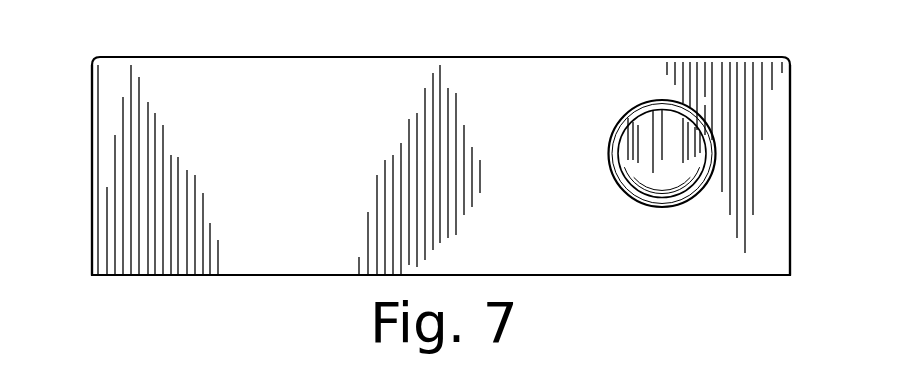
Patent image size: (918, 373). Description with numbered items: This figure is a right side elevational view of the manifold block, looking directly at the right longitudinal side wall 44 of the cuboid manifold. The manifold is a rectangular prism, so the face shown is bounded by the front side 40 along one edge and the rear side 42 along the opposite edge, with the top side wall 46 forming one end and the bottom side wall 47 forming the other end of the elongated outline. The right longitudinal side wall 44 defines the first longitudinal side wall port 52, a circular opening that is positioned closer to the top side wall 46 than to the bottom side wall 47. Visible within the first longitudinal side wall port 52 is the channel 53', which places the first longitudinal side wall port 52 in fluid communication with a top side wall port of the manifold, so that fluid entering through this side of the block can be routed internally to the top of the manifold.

The front side 40 is at (256, 57).
The rear side 42 is at (248, 277).
The right longitudinal side wall 44 is at (108, 168).
The top side wall 46 is at (790, 207).
The bottom side wall 47 is at (92, 210).
The first longitudinal side wall port 52 is at (681, 184).
The channel 53' is at (657, 121).